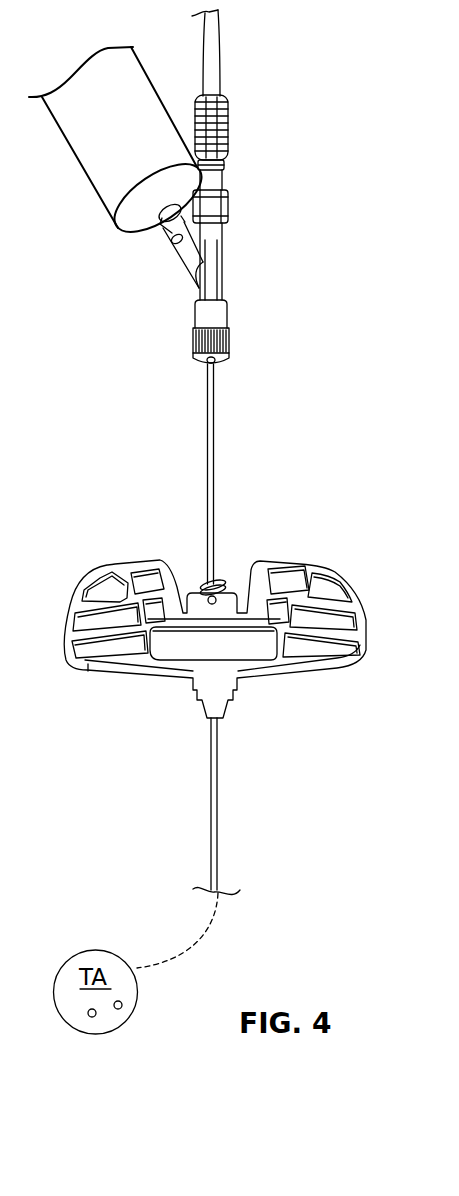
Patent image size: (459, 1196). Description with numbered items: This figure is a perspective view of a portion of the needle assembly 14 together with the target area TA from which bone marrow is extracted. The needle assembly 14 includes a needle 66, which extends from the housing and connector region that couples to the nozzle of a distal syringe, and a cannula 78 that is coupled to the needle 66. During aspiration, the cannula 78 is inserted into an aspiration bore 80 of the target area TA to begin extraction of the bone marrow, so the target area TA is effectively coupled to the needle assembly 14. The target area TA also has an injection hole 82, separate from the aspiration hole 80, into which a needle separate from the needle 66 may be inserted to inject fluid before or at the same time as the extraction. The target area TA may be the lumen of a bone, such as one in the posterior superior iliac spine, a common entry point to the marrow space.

The needle assembly 14 is at (392, 633).
The needle 66 is at (215, 468).
The cannula 78 is at (222, 848).
The aspiration bore 80 is at (92, 1017).
The injection hole 82 is at (122, 1004).